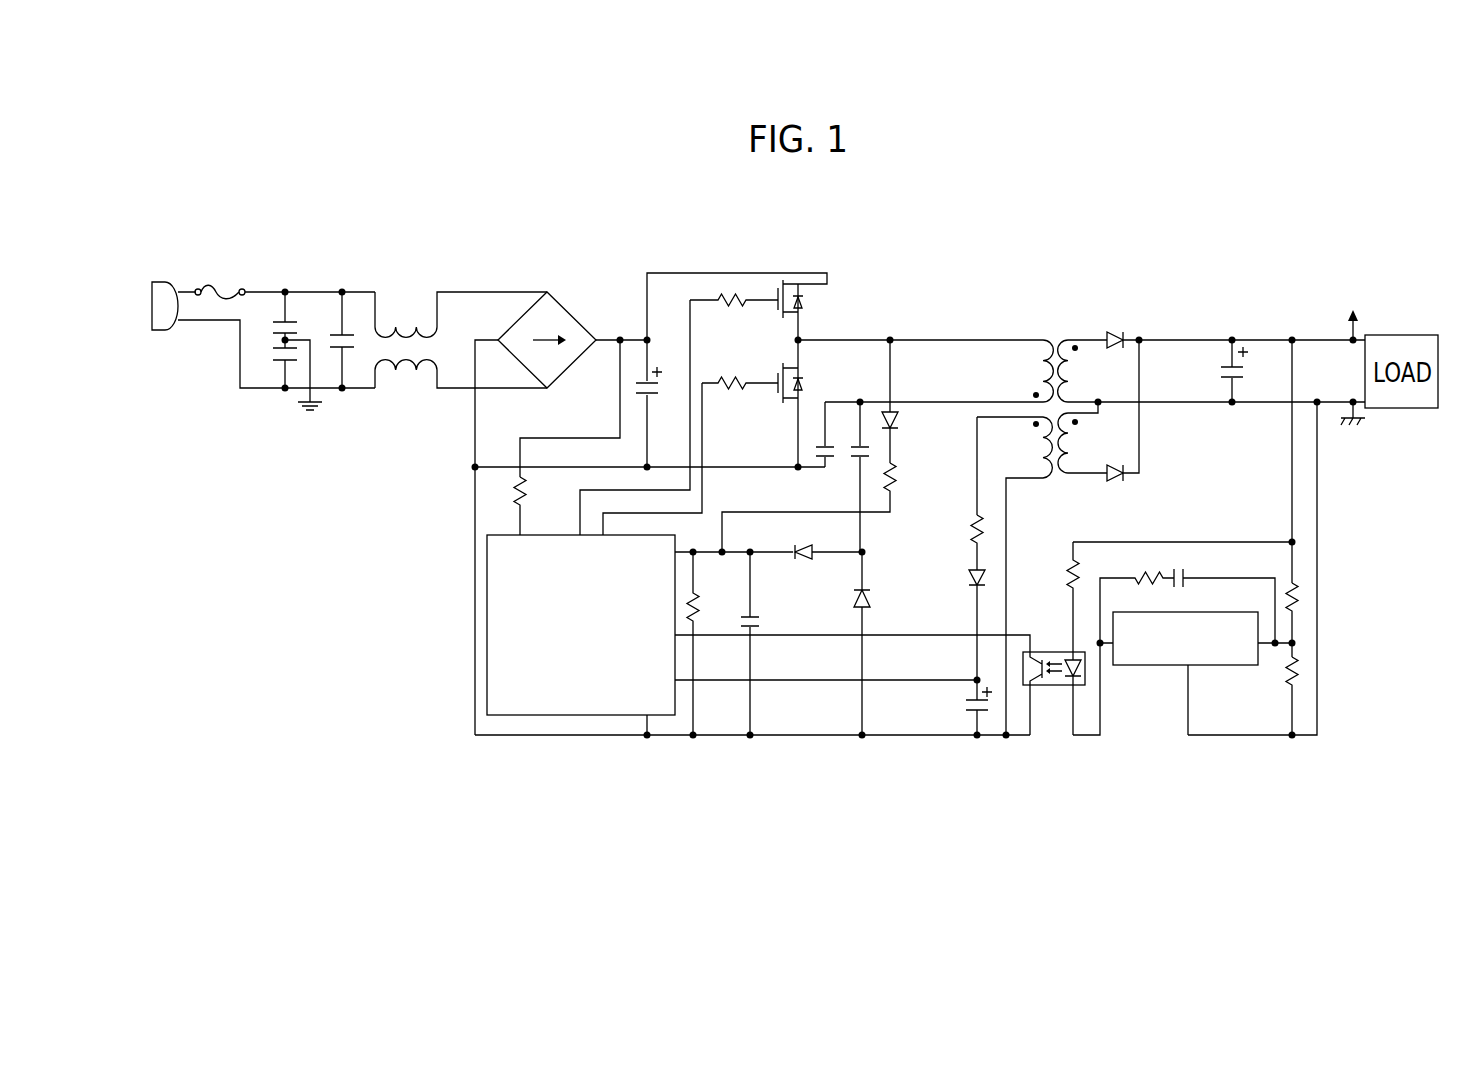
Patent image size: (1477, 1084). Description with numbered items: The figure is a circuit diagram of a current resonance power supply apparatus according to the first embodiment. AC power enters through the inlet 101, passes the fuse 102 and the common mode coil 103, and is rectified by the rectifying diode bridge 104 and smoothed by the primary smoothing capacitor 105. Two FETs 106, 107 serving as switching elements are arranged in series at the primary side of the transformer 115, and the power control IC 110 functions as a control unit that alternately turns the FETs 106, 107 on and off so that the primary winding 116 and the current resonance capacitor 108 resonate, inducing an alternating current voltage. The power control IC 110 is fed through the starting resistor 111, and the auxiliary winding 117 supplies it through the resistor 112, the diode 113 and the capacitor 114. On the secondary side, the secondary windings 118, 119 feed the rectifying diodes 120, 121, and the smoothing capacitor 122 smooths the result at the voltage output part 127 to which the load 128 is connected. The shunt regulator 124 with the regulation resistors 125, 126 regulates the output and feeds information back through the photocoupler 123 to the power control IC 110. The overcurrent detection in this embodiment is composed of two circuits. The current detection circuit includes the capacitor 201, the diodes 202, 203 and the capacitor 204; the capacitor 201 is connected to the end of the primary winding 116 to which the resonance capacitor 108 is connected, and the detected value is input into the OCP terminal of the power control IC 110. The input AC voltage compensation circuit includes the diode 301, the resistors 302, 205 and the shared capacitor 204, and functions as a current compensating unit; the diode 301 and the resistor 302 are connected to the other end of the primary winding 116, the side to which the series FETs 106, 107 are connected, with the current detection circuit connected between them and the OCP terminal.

The inlet 101 is at (173, 286).
The fuse 102 is at (225, 290).
The common mode coil 103 is at (396, 300).
The rectifying diode bridge 104 is at (576, 310).
The primary smoothing capacitor 105 is at (633, 390).
The FET 106 is at (779, 282).
The FET 107 is at (782, 404).
The current resonance capacitor 108 is at (813, 466).
The power control integrated circuit 110 is at (487, 666).
The starting resistor 111 is at (530, 497).
The resistor 112 is at (975, 532).
The diode 113 is at (970, 583).
The capacitor 114 is at (970, 706).
The transformer 115 is at (1043, 338).
The primary winding 116 is at (1036, 366).
The auxiliary winding 117 is at (1038, 445).
The secondary winding 118 is at (1083, 390).
The secondary winding 119 is at (1085, 453).
The rectifying diode 120 is at (1112, 332).
The rectifying diode 121 is at (1128, 485).
The smoothing capacitor 122 is at (1225, 370).
The photocoupler 123 is at (1056, 652).
The shunt regulator 124 is at (1222, 667).
The regulation resistor 125 is at (1300, 607).
The regulation resistor 126 is at (1300, 680).
The voltage output part 127 is at (1353, 339).
The load 128 is at (1380, 409).
The capacitor 201 is at (850, 457).
The diode 202 is at (791, 547).
The diode 203 is at (858, 604).
The capacitor 204 is at (759, 618).
The resistor 205 is at (728, 604).
The diode 301 is at (898, 411).
The resistor 302 is at (898, 463).